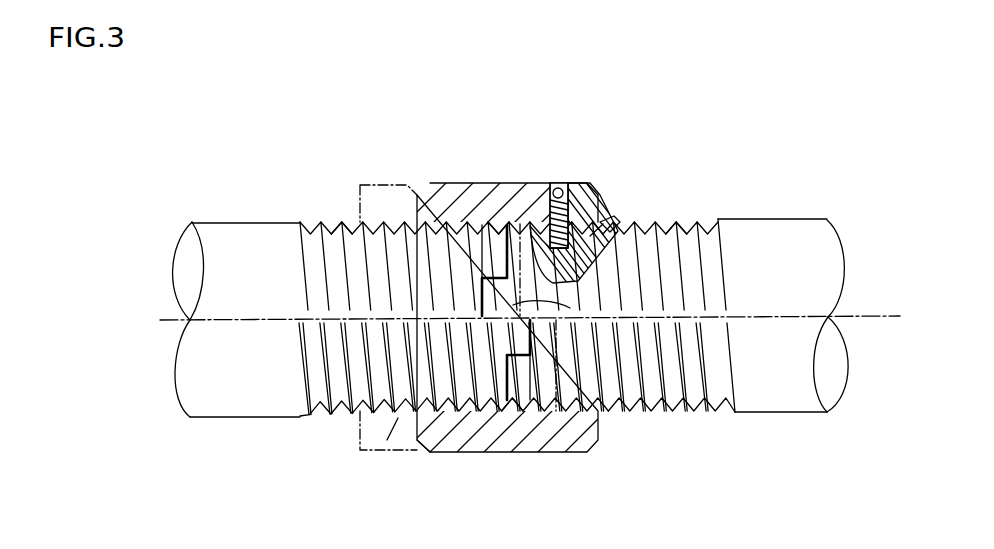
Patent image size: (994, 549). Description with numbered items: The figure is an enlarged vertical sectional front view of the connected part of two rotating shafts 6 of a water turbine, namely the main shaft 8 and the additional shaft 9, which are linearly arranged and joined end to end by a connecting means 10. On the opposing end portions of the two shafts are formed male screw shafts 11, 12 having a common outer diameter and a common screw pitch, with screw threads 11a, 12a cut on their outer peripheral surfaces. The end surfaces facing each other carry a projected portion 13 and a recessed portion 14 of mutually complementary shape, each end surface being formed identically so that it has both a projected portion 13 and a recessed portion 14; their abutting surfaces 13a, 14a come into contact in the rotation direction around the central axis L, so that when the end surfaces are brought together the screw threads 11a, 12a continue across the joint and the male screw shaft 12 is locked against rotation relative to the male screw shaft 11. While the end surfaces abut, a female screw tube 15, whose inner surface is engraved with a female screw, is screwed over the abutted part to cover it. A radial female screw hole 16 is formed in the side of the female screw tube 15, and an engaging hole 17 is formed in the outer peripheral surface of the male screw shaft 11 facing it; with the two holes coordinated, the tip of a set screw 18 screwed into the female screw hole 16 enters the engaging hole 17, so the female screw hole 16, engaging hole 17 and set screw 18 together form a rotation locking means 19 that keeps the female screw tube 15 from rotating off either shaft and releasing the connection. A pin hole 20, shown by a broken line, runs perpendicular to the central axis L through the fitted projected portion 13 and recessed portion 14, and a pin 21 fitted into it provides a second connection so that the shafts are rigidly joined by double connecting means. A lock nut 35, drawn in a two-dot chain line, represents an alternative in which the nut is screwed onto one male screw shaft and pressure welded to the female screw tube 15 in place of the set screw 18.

The rotating shaft 6 is at (511, 278).
The main shaft 8 is at (793, 217).
The additional shaft 9 is at (232, 222).
The connecting means 10 is at (457, 183).
The male screw shaft 11 is at (698, 223).
The screw thread 11a is at (673, 223).
The male screw shaft 12 is at (322, 225).
The screw thread 12a is at (343, 225).
The projected portion 13 is at (482, 296).
The abutting surface 13a is at (512, 292).
The recessed portion 14 is at (514, 290).
The abutting surface 14a is at (520, 224).
The female screw tube 15 is at (446, 453).
The female screw hole 16 is at (565, 186).
The engaging hole 17 is at (612, 218).
The set screw 18 is at (578, 190).
The rotation locking means 19 is at (558, 181).
The pin hole 20 is at (365, 465).
The pin 21 is at (588, 350).
The lock nut 35 is at (387, 185).
The central axis L is at (880, 316).